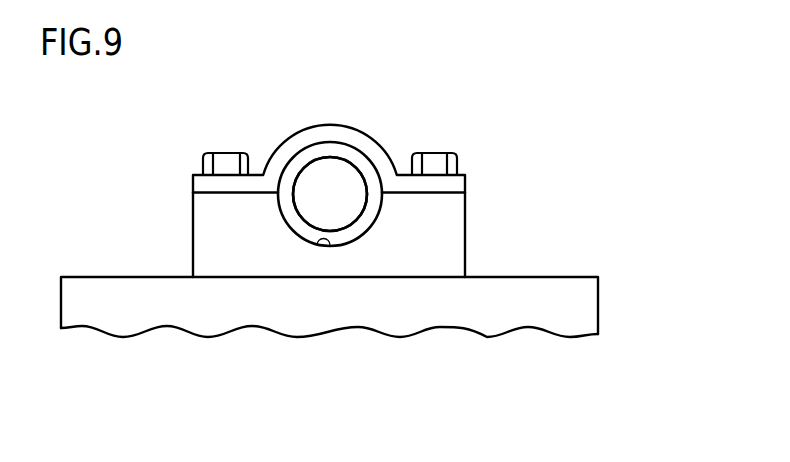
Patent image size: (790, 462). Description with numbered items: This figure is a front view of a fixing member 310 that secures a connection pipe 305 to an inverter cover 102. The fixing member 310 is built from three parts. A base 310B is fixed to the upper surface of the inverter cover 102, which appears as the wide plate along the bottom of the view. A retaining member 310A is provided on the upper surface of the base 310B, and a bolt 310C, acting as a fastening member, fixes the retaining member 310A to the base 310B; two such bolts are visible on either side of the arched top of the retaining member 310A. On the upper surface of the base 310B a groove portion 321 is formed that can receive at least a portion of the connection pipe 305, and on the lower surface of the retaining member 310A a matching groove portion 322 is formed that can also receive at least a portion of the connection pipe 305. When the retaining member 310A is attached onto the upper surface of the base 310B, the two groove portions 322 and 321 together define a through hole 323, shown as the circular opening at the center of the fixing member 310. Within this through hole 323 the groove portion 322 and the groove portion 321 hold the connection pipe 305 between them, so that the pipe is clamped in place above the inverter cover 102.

The inverter cover 102 is at (127, 275).
The connection pipe 305 is at (330, 148).
The fixing member 310 is at (405, 201).
The retaining member 310A is at (452, 185).
The base 310B is at (452, 213).
The bolt 310C is at (455, 165).
The groove portion 321 is at (327, 243).
The groove portion 322 is at (305, 153).
The through hole 323 is at (319, 289).